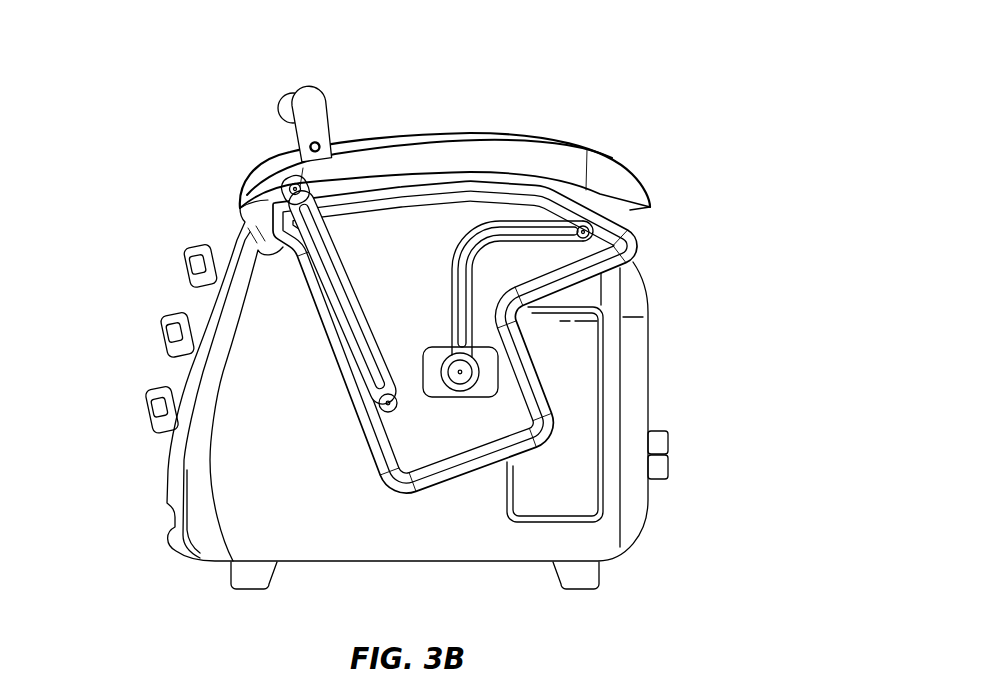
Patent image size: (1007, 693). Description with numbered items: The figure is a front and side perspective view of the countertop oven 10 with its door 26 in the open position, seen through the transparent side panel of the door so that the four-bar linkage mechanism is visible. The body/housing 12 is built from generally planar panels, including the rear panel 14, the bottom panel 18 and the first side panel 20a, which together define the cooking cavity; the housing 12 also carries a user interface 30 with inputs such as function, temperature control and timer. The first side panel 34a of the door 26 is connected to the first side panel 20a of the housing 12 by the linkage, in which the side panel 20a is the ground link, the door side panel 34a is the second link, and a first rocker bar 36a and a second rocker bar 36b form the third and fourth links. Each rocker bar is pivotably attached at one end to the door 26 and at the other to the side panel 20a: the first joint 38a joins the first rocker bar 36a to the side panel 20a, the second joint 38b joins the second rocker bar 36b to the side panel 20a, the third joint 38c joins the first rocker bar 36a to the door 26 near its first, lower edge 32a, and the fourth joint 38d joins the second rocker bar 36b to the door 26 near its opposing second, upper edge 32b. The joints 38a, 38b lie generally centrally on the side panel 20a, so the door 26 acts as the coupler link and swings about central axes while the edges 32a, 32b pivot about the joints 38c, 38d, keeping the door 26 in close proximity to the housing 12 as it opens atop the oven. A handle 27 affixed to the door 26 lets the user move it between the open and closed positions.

The countertop oven 10 is at (596, 96).
The body/housing 12 is at (248, 401).
The rear panel 14 is at (650, 394).
The bottom panel 18 is at (376, 563).
The first side panel 20a is at (250, 457).
The door 26 is at (457, 135).
The handle 27 is at (292, 87).
The user interface 30 is at (191, 264).
The first edge 32a is at (250, 186).
The second edge 32b is at (651, 207).
The first side panel of the door 34a is at (510, 372).
The first rocker bar 36a is at (353, 289).
The second rocker bar 36b is at (468, 266).
The first joint 38a is at (384, 404).
The second joint 38b is at (460, 376).
The third joint 38c is at (278, 207).
The fourth joint 38d is at (590, 232).